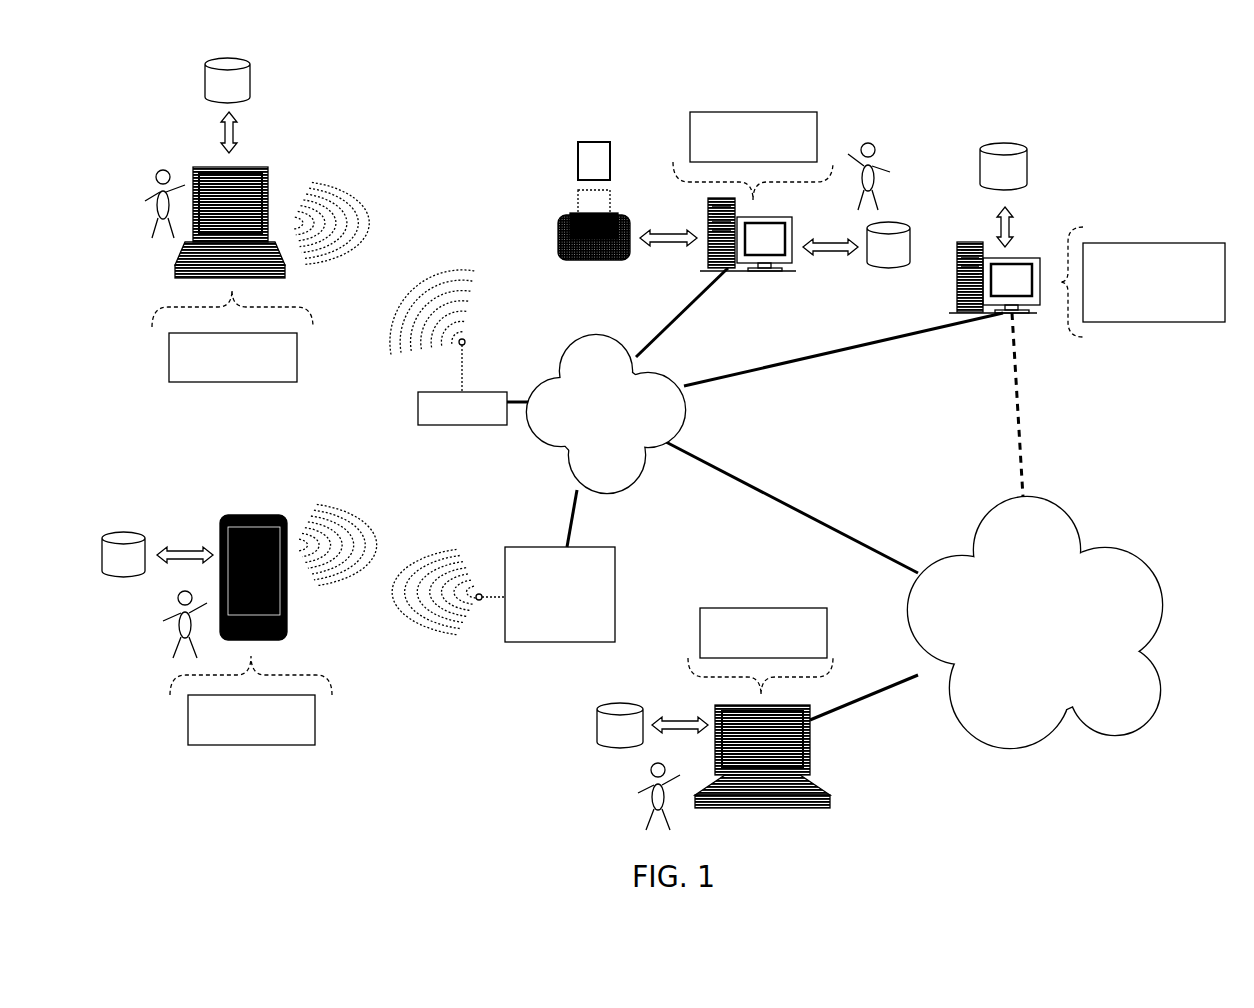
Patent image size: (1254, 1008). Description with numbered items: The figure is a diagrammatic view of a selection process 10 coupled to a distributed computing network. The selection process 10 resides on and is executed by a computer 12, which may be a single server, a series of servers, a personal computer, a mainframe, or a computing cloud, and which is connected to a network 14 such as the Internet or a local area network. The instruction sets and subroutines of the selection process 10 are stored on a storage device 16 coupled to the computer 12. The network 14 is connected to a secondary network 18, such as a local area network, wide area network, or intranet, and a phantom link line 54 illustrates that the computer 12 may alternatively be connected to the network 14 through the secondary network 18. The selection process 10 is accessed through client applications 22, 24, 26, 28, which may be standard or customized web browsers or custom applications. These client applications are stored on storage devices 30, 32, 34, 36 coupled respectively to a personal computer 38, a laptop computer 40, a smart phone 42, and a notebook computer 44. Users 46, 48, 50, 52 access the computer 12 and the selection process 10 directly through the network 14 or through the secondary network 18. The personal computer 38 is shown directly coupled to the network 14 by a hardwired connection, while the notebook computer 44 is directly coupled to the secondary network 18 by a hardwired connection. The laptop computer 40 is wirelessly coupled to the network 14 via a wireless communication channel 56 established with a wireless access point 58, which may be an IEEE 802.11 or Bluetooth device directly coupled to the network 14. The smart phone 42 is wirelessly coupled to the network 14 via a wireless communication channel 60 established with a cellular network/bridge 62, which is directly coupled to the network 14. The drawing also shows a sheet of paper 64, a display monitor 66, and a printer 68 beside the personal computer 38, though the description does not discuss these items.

The selection process 10 is at (1225, 272).
The computer 12 is at (962, 258).
The network 14 is at (606, 414).
The storage device 16 is at (1003, 166).
The secondary network 18 is at (1035, 622).
The client application 22 is at (817, 140).
The client application 24 is at (297, 367).
The client application 26 is at (315, 712).
The client application 28 is at (827, 633).
The storage device 30 is at (888, 245).
The storage device 32 is at (227, 80).
The storage device 34 is at (123, 554).
The storage device 36 is at (620, 725).
The personal computer 38 is at (708, 222).
The laptop computer 40 is at (265, 190).
The smart phone 42 is at (289, 582).
The notebook computer 44 is at (812, 750).
The user 46 is at (886, 157).
The user 48 is at (125, 195).
The user 50 is at (168, 606).
The user 52 is at (625, 787).
The phantom link line 54 is at (990, 380).
The wireless communication channel 56 is at (405, 238).
The wireless access point 58 is at (414, 408).
The wireless communication channel 60 is at (397, 548).
The cellular network/bridge 62 is at (615, 560).
The paper 64 is at (573, 162).
The display monitor 66 is at (790, 230).
The printer 68 is at (557, 237).